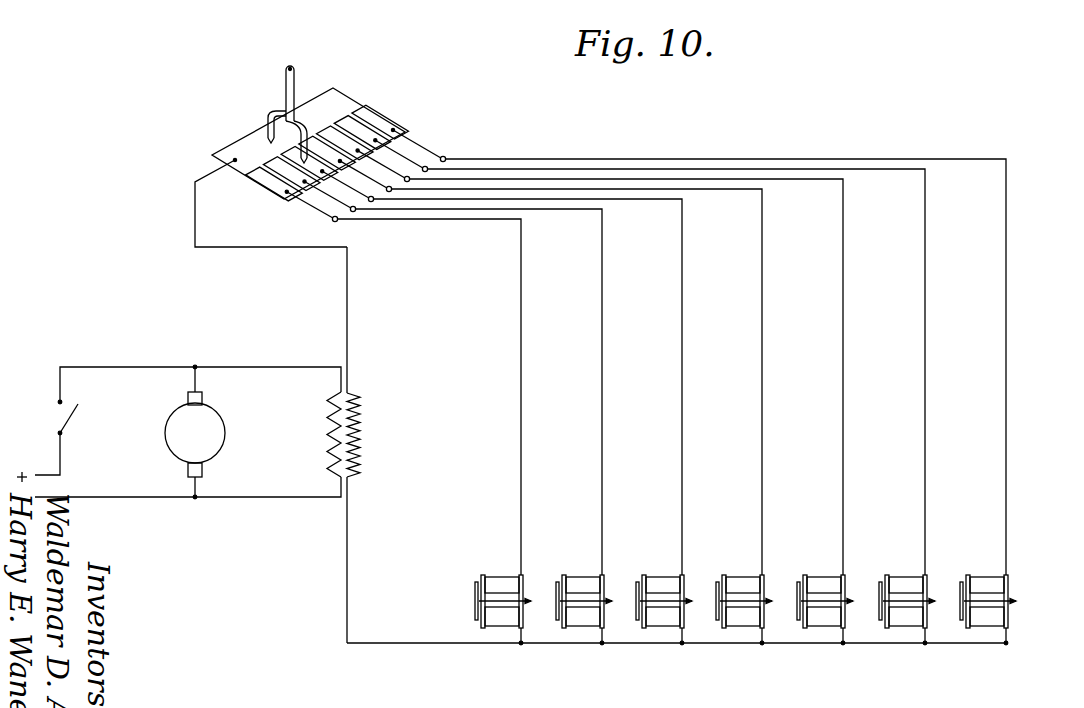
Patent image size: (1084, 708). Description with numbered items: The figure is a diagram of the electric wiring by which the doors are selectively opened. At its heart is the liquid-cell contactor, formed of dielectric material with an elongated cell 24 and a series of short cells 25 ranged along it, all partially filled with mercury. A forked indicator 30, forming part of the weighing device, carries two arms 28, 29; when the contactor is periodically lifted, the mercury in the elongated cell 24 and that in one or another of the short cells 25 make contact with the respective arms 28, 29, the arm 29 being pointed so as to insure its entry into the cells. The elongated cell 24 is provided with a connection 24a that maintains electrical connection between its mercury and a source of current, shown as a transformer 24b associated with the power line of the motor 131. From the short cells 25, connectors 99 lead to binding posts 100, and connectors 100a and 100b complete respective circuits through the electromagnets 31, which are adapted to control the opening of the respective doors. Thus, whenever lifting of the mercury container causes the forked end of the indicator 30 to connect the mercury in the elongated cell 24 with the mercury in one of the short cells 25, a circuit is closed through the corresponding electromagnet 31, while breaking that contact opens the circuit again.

The elongated cell 24 is at (333, 104).
The connection 24a is at (350, 290).
The transformer 24b is at (360, 402).
The short cells 25 is at (366, 128).
The arm of forked indicator 28 is at (270, 118).
The arm of forked indicator 29 is at (268, 138).
The forked indicator 30 is at (287, 68).
The electromagnets 31 is at (501, 577).
The connectors 99 is at (416, 141).
The binding posts 100 is at (447, 157).
The connectors 100a is at (521, 362).
The connectors 100b is at (518, 632).
The motor 131 is at (215, 442).